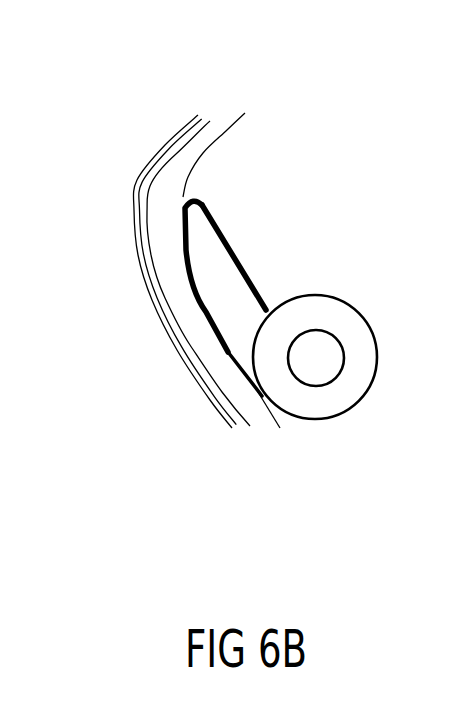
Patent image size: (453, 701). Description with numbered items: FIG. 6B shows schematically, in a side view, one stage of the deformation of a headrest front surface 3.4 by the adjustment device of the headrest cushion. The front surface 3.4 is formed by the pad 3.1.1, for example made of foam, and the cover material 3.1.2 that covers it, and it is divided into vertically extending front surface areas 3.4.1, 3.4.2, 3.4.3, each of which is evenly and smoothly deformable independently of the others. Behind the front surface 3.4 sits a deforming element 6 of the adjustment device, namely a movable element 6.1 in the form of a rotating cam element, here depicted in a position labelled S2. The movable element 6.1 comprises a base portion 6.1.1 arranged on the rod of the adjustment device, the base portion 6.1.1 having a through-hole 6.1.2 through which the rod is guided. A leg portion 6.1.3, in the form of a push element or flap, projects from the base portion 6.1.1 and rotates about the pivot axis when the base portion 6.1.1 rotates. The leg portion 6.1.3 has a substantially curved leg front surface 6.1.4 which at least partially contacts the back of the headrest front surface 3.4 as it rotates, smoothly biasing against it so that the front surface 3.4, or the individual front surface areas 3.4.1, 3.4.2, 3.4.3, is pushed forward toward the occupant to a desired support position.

The pad 3.1.1 is at (209, 133).
The cover material 3.1.2 is at (165, 145).
The front surface 3.4 is at (133, 232).
The front surface area 3.4.1 is at (173, 183).
The front surface area 3.4.2 is at (173, 288).
The front surface area 3.4.3 is at (207, 365).
The deforming element 6 is at (219, 345).
The movable element 6.1 is at (219, 345).
The position S2 is at (219, 345).
The base portion 6.1.1 is at (307, 300).
The through-hole 6.1.2 is at (328, 332).
The leg portion 6.1.3 is at (207, 258).
The leg front surface 6.1.4 is at (207, 297).